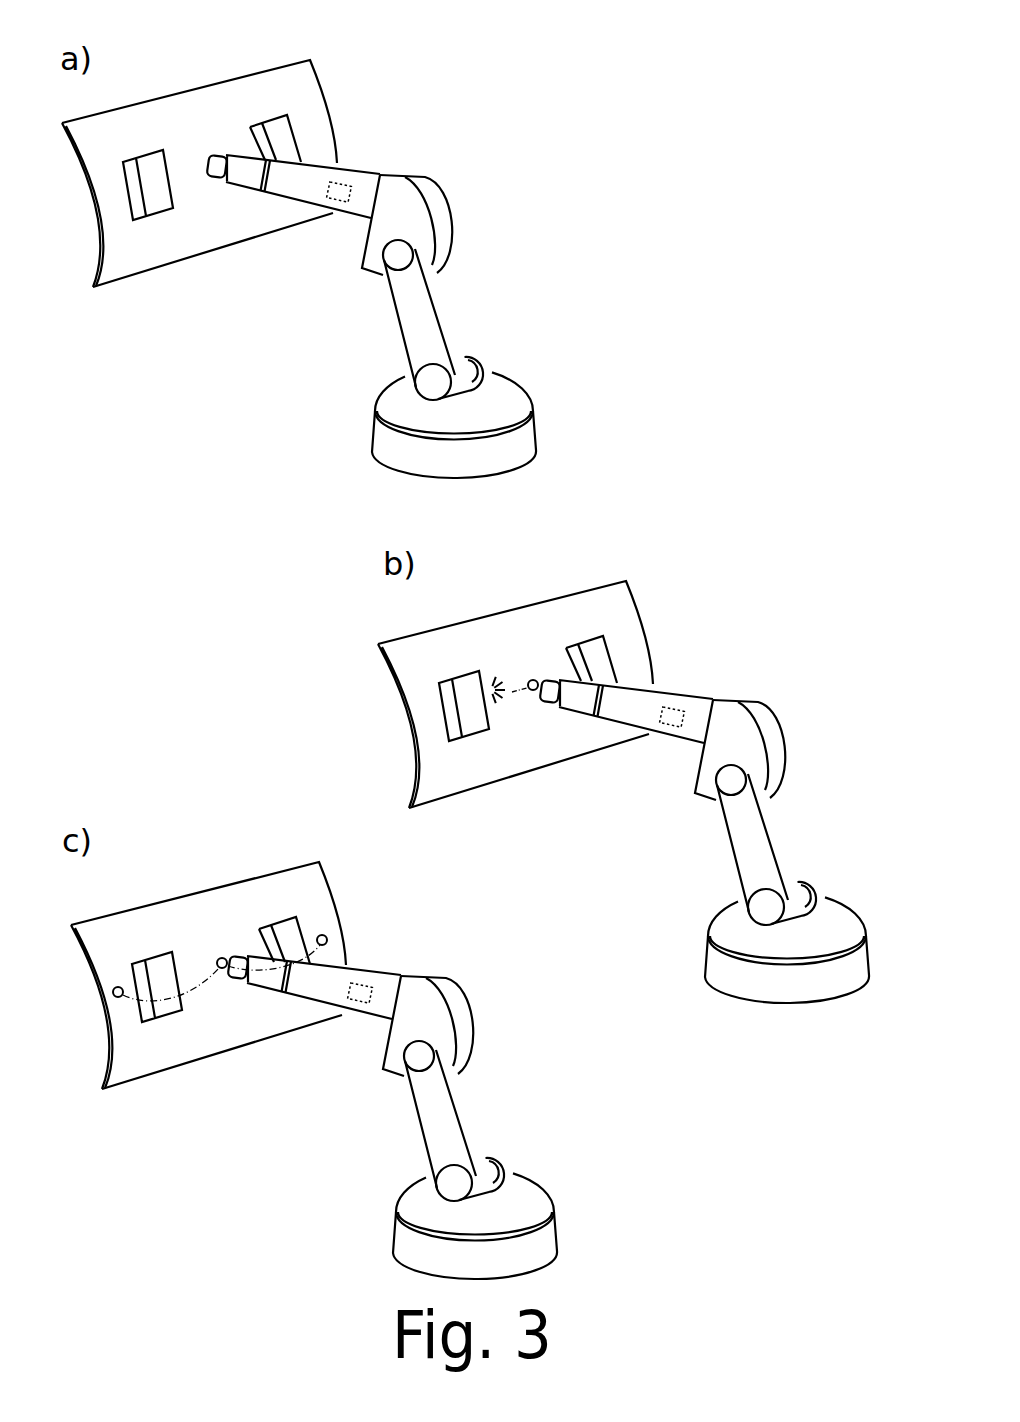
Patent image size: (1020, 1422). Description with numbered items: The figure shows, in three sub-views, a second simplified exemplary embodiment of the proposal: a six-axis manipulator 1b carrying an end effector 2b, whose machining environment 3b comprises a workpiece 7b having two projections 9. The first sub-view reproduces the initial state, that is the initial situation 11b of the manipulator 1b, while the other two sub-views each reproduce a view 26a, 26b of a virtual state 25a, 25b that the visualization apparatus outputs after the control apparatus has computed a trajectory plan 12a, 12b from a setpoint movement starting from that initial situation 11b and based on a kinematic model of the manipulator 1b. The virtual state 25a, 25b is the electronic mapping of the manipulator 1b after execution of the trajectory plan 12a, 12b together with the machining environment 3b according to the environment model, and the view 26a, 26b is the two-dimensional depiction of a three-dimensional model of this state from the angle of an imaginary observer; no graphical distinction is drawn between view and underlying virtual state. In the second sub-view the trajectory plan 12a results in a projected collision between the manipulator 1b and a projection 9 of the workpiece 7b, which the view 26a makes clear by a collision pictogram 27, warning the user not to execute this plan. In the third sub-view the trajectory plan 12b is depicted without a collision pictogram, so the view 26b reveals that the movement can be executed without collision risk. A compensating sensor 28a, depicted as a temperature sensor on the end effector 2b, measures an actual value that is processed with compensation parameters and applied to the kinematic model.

In FIG. 3a, the manipulator 1b is at (448, 310).
In FIG. 3b, the manipulator 1b is at (773, 823).
In FIG. 3c, the manipulator 1b is at (472, 1113).
In FIG. 3a, the initial situation 11b is at (506, 326).
In FIG. 3a, the end effector 2b is at (217, 153).
In FIG. 3b, the end effector 2b is at (555, 679).
In FIG. 3c, the end effector 2b is at (238, 958).
In FIG. 3a, the machining environment 3b is at (361, 122).
In FIG. 3b, the machining environment 3b is at (646, 568).
In FIG. 3c, the machining environment 3b is at (271, 848).
In FIG. 3a, the workpiece 7b is at (182, 110).
In FIG. 3b, the workpiece 7b is at (552, 613).
In FIG. 3c, the workpiece 7b is at (160, 920).
In FIG. 3a, the projections 9 is at (152, 187).
In FIG. 3b, the projections 9 is at (478, 703).
In FIG. 3c, the projections 9 is at (140, 1020).
In FIG. 3b, the trajectory plan 12a is at (520, 690).
In FIG. 3c, the trajectory plan 12b is at (200, 992).
In FIG. 3b, the virtual state 25a is at (722, 671).
In FIG. 3b, the view 26a is at (720, 713).
In FIG. 3c, the virtual state 25b is at (406, 958).
In FIG. 3c, the view 26b is at (407, 998).
In FIG. 3b, the collision pictogram 27 is at (497, 665).
In FIG. 3a, the compensating sensor 28a is at (333, 198).
In FIG. 3b, the compensating sensor 28a is at (668, 720).
In FIG. 3c, the compensating sensor 28a is at (353, 1000).